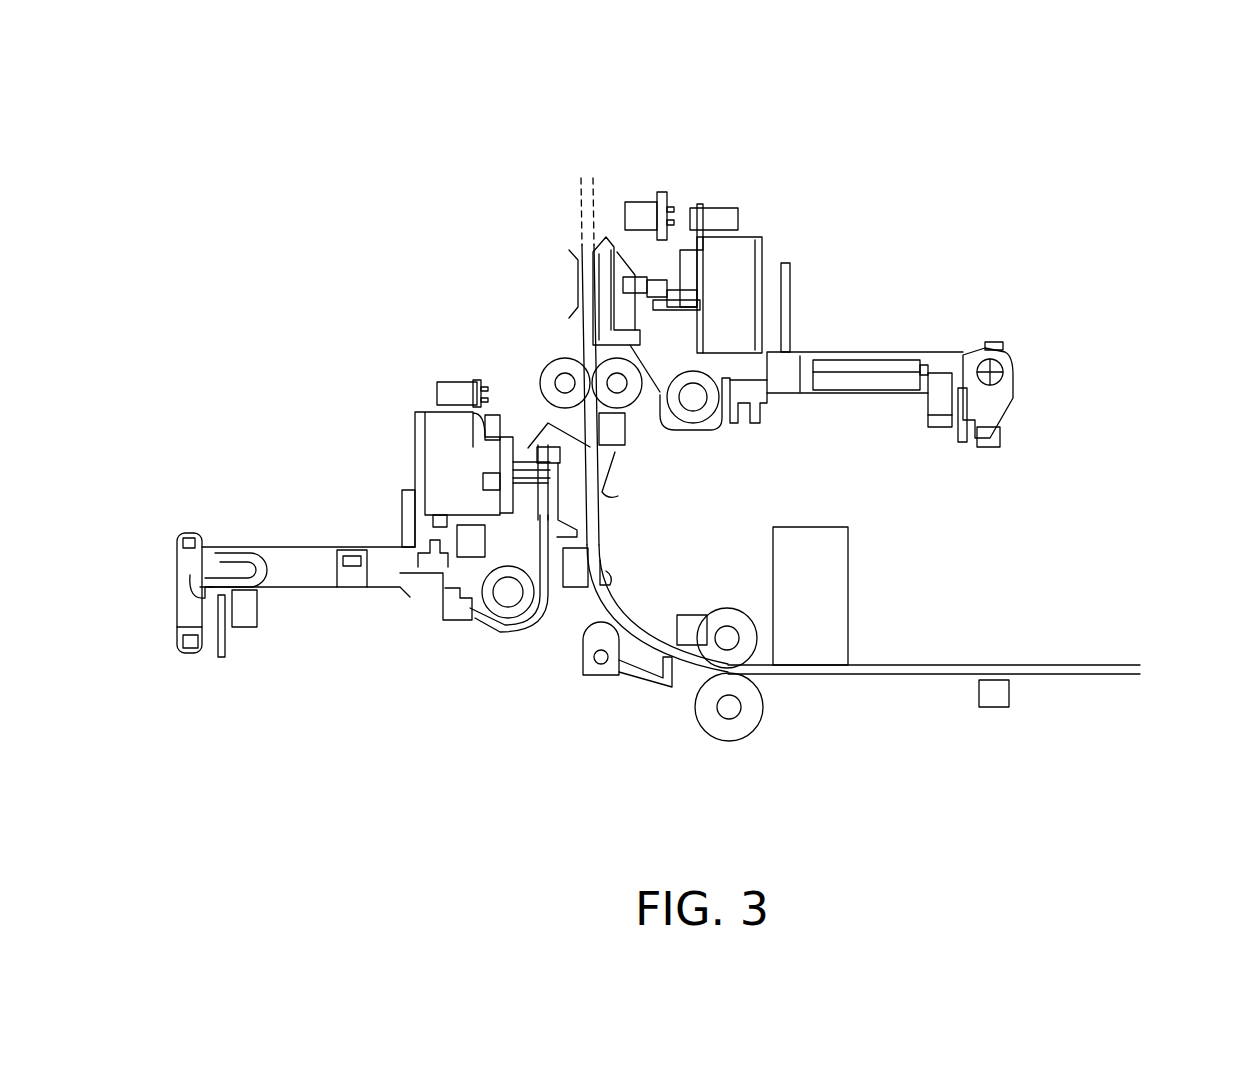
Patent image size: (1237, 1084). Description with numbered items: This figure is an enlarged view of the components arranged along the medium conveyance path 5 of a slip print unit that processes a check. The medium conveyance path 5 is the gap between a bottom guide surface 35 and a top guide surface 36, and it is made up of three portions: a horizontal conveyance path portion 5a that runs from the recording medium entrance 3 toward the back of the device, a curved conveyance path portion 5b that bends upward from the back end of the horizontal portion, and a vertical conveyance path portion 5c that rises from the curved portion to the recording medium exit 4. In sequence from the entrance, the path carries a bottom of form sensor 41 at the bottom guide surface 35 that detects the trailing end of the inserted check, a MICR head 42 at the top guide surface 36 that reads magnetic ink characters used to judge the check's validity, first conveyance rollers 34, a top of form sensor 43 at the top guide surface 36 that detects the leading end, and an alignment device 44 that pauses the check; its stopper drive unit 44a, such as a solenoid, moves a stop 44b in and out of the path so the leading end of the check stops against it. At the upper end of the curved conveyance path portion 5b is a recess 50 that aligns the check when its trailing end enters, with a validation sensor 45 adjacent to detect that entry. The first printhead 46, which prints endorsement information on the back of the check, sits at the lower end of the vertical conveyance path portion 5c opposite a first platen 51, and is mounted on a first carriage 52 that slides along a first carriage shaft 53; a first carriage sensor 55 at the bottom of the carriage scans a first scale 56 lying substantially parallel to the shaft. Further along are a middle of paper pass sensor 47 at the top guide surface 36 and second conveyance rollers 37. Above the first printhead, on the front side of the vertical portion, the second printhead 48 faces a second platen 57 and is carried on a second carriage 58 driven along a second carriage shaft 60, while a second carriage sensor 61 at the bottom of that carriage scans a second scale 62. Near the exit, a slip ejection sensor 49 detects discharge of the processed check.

The recording medium entrance 3 is at (1160, 669).
The recording medium exit 4 is at (586, 162).
The medium conveyance path 5 is at (1078, 650).
The horizontal conveyance path portion 5a is at (1092, 676).
The curved conveyance path portion 5b is at (641, 612).
The vertical conveyance path portion 5c is at (582, 240).
The first conveyance rollers 34 is at (730, 736).
The bottom guide surface 35 is at (922, 674).
The top guide surface 36 is at (980, 665).
The second conveyance rollers 37 is at (553, 372).
The bottom of form sensor 41 is at (996, 708).
The MICR head 42 is at (848, 598).
The top of form sensor 43 is at (692, 620).
The alignment device 44 is at (678, 746).
The stopper drive unit 44a is at (588, 674).
The stop 44b is at (644, 680).
The validation sensor 45 is at (573, 588).
The first printhead 46 is at (540, 465).
The middle of paper pass sensor 47 is at (623, 431).
The second printhead 48 is at (650, 292).
The slip ejection sensor 49 is at (639, 198).
The recess 50 is at (604, 575).
The first platen 51 is at (604, 478).
The first carriage 52 is at (440, 535).
The first carriage shaft 53 is at (503, 598).
The first carriage sensor 55 is at (186, 618).
The first scale 56 is at (226, 652).
The second platen 57 is at (576, 283).
The second carriage 58 is at (733, 355).
The second carriage shaft 60 is at (695, 401).
The second carriage sensor 61 is at (937, 414).
The second scale 62 is at (963, 437).